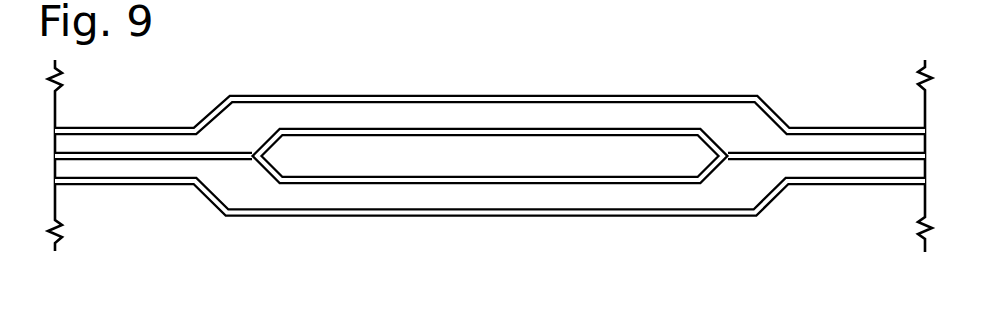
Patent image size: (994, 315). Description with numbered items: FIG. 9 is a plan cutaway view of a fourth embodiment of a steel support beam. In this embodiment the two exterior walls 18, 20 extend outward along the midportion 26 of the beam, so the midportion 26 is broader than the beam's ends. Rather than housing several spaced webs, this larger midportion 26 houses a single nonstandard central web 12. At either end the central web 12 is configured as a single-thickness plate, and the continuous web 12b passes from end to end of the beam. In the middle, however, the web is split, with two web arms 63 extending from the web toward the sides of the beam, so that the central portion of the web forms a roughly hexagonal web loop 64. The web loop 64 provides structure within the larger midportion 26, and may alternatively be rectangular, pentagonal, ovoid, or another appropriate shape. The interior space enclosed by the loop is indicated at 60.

The midportion 26 is at (551, 44).
The wall 18 is at (356, 95).
The wall 20 is at (371, 217).
The central web 12 is at (121, 161).
The continuous web 12b is at (567, 186).
The web arm 63 is at (264, 178).
The web loop 64 is at (486, 128).
The cavity 60 is at (593, 302).